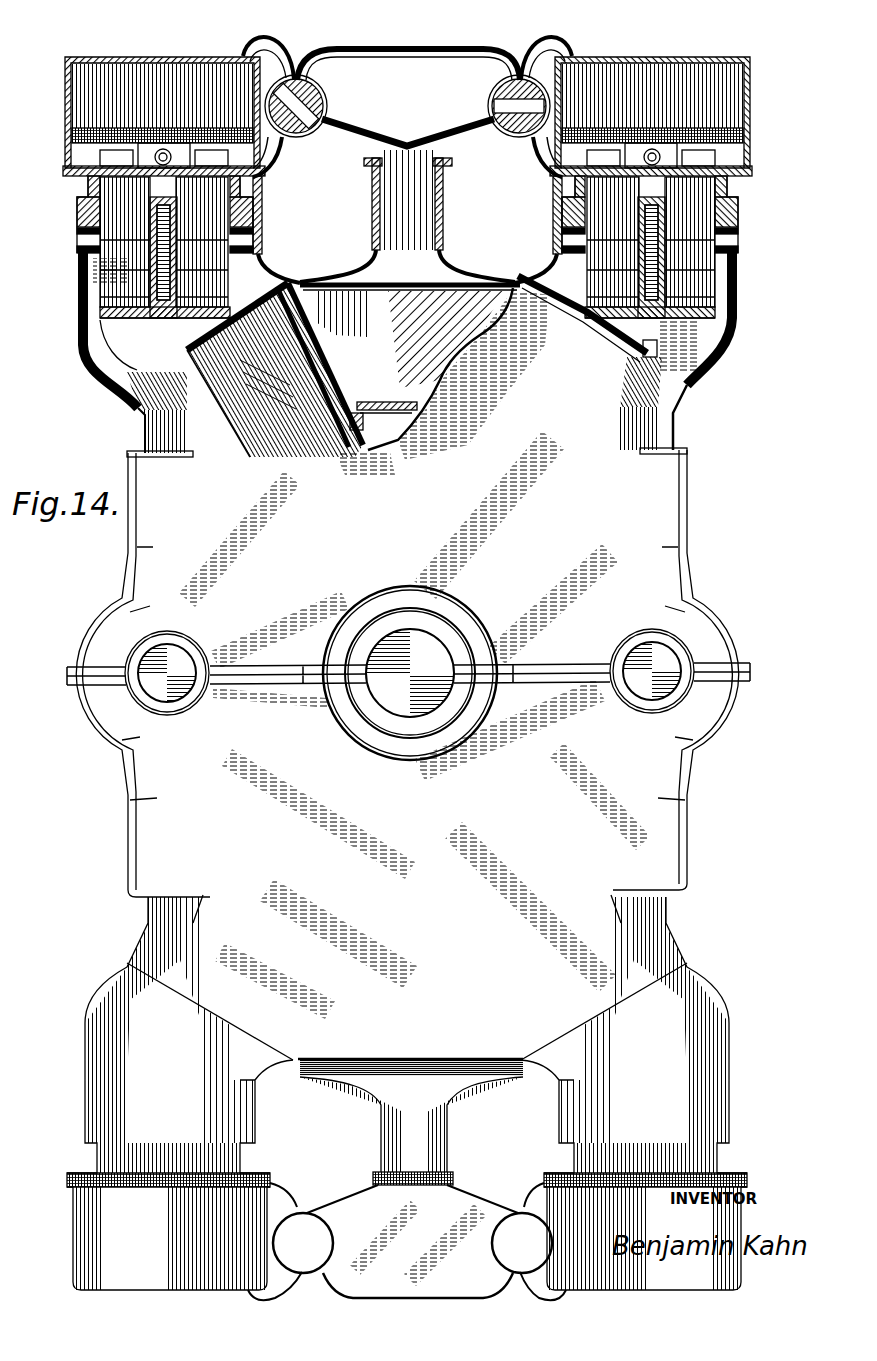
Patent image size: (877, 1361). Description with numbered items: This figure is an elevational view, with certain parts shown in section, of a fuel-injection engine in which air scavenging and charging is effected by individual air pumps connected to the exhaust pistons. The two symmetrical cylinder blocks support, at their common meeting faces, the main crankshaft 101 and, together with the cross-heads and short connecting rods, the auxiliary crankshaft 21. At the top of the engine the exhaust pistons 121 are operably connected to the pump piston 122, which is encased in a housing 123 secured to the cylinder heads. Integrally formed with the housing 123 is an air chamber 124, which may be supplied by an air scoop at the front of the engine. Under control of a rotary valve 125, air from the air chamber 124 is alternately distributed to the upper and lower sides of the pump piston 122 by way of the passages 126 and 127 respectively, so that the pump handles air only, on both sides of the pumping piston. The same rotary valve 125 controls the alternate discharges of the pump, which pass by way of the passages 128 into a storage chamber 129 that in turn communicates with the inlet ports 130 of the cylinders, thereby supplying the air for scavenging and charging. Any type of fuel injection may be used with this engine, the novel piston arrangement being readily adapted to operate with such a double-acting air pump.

The auxiliary crankshaft 21 is at (168, 660).
The main crankshaft 101 is at (395, 702).
The exhaust pistons 121 is at (113, 253).
The pump piston 122 is at (167, 130).
The housing 123 is at (65, 94).
The air chamber 124 is at (408, 97).
The rotary valve 125 is at (323, 82).
The passage 126 is at (278, 48).
The passage 127 is at (270, 152).
The passages 128 is at (343, 133).
The storage chamber 129 is at (410, 367).
The inlet ports 130 is at (340, 388).